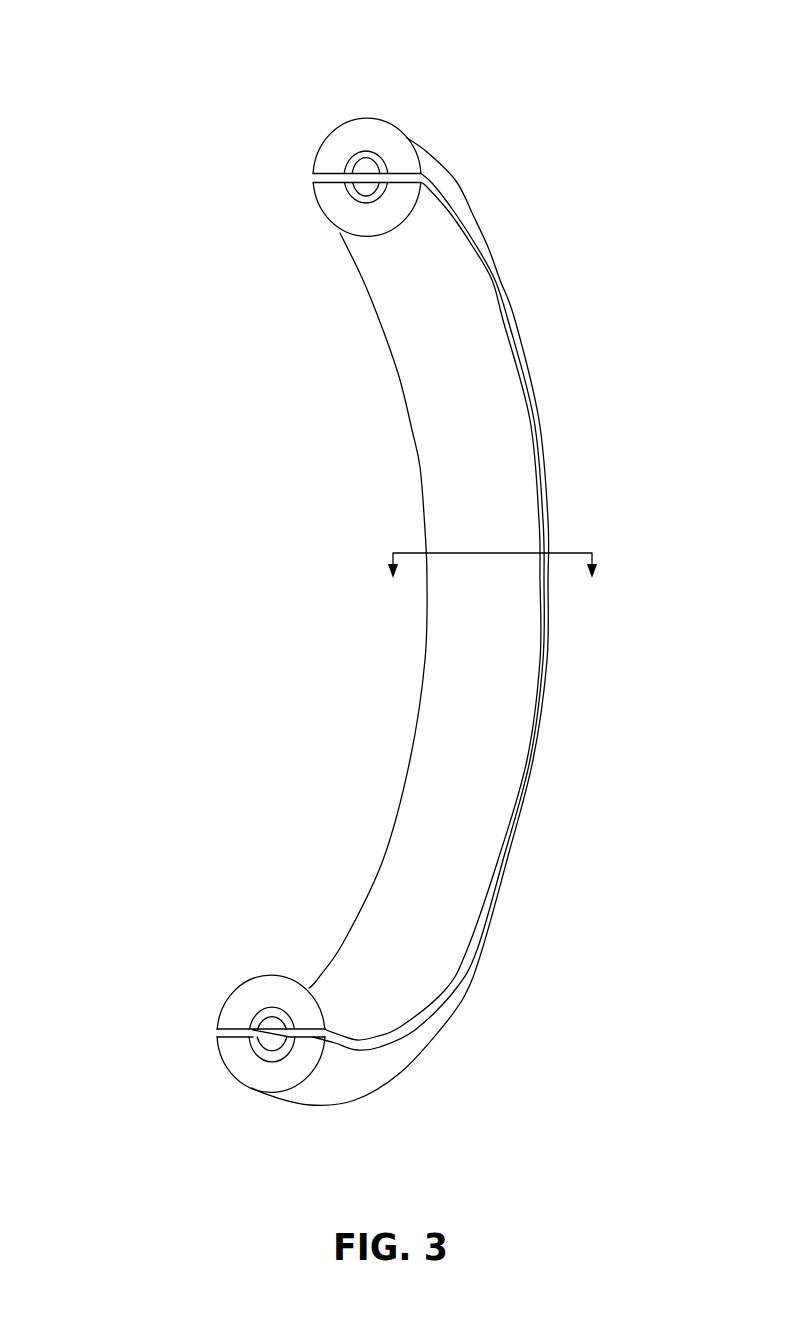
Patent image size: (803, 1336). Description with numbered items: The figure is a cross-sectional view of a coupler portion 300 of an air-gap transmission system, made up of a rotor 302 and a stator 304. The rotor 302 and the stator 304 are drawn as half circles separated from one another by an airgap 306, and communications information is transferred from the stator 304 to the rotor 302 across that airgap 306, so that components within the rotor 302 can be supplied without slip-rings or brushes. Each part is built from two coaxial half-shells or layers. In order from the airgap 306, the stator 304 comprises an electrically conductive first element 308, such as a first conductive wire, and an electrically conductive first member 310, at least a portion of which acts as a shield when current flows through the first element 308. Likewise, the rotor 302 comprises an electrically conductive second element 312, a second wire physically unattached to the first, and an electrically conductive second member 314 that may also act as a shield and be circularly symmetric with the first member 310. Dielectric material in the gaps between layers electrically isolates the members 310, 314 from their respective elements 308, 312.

The coupler portion 300 is at (165, 51).
The rotor 302 is at (330, 255).
The stator 304 is at (309, 131).
The airgap 306 is at (443, 179).
The electrically conductive first element 308 is at (370, 168).
The electrically conductive first member 310 is at (378, 125).
The electrically conductive second element 312 is at (362, 190).
The electrically conductive second member 314 is at (362, 233).